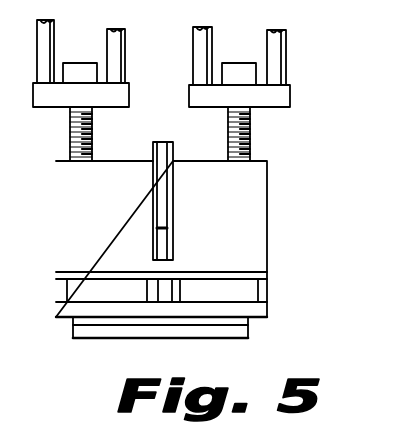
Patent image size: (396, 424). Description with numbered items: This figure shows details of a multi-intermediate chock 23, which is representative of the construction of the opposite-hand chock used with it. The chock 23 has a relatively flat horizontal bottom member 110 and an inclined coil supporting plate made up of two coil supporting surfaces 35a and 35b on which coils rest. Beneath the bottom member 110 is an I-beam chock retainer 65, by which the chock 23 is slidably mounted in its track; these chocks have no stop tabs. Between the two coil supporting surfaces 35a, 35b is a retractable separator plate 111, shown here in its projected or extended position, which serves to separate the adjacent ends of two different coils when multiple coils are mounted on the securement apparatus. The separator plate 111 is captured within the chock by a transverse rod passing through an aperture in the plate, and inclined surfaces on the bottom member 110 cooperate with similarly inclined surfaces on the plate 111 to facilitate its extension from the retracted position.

The multi-intermediate chock 23 is at (300, 218).
The coil supporting surface 35a is at (71, 223).
The coil supporting surface 35b is at (253, 203).
The I-beam chock retainer 65 is at (253, 333).
The bottom member 110 is at (152, 318).
The retractable separator plate 111 is at (162, 204).